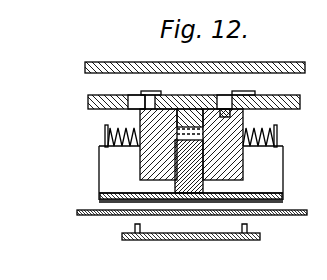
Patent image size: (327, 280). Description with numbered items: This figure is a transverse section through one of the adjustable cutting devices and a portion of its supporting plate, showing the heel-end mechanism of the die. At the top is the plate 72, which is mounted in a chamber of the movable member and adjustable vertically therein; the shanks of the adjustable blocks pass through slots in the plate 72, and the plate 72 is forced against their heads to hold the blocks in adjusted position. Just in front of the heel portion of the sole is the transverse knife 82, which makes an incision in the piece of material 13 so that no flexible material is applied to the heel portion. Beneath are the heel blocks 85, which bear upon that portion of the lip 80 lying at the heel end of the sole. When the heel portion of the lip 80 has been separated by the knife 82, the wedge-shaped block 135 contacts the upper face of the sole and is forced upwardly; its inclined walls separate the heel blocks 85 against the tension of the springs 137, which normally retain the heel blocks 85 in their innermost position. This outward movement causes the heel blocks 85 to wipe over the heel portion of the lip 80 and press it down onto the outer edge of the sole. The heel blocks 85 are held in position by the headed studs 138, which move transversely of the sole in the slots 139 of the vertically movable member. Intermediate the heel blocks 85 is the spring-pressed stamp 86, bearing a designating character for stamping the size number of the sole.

The plate 72 is at (275, 63).
The transverse knife 82 is at (300, 101).
The headed studs 138 is at (240, 95).
The slots 139 is at (248, 96).
The springs 137 is at (118, 118).
The heel blocks 85 is at (140, 168).
The wedge-shaped block 135 is at (162, 186).
The piece of material 13 is at (86, 215).
The lip 80 is at (248, 227).
The spring-pressed stamp 86 is at (179, 196).